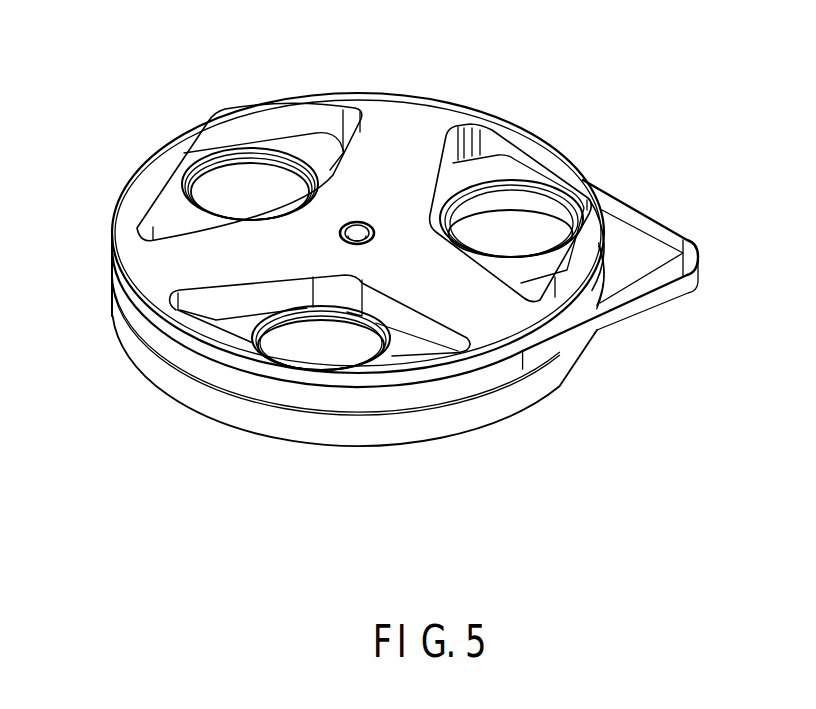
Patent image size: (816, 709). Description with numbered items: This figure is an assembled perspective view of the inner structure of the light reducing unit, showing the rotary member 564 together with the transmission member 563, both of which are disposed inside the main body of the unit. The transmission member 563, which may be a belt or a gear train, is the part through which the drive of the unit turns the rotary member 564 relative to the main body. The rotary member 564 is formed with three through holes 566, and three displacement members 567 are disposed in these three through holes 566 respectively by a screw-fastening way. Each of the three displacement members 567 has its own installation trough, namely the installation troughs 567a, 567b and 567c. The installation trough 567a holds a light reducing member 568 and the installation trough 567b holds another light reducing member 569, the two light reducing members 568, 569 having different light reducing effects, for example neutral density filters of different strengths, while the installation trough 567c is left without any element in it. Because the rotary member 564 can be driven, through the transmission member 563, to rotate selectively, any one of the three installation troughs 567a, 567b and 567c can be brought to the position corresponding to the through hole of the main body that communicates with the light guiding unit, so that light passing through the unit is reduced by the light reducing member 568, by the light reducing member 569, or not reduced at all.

The transmission member 563 is at (643, 313).
The rotary member 564 is at (428, 80).
The through holes 566 is at (283, 122).
The displacement members 567 is at (172, 213).
The installation trough 567a is at (205, 153).
The installation trough 567b is at (412, 347).
The installation trough 567c is at (542, 193).
The light reducing member 568 is at (250, 187).
The light reducing member 569 is at (293, 347).